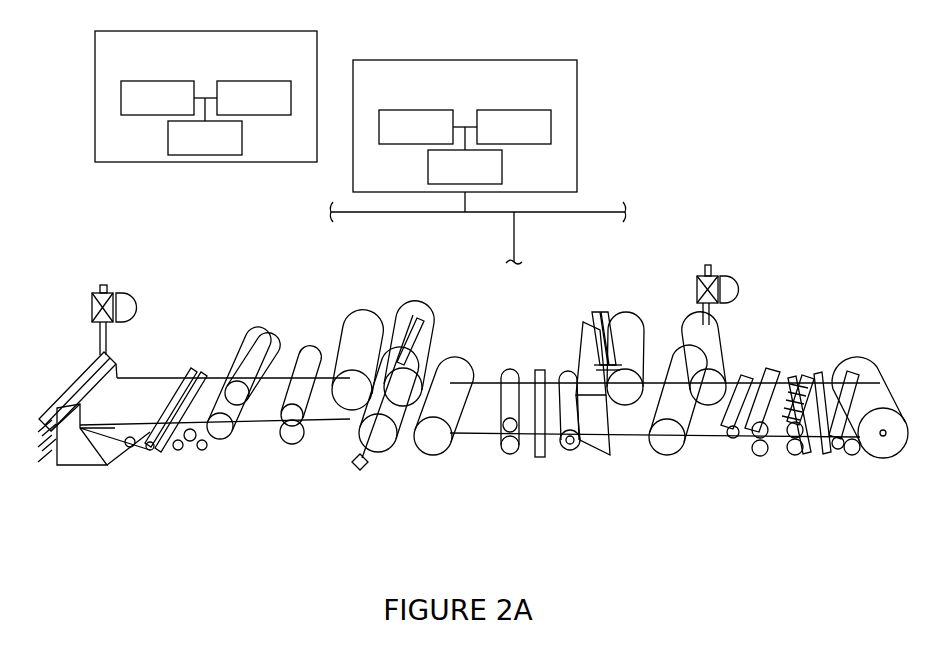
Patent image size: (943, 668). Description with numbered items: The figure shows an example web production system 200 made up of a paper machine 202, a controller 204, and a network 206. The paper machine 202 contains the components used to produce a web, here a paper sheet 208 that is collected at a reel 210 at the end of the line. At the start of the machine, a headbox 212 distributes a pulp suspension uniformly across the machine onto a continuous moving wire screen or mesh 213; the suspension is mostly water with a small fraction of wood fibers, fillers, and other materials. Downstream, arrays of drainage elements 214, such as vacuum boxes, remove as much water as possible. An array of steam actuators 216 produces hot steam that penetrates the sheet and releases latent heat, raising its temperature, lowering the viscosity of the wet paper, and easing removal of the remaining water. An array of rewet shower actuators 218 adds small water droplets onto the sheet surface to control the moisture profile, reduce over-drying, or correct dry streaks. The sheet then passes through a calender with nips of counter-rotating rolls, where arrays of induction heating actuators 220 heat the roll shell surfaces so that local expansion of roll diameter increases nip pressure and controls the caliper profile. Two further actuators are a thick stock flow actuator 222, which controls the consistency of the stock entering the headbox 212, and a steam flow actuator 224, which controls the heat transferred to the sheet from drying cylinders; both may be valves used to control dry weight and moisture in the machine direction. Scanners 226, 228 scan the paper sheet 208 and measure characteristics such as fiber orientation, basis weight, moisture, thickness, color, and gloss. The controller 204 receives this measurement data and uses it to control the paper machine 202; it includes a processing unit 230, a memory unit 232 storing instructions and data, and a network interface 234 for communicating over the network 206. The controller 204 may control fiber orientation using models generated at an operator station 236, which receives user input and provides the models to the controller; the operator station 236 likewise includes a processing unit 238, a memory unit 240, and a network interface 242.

The web production system 200 is at (473, 405).
The paper machine 202 is at (273, 283).
The controller 204 is at (578, 160).
The network 206 is at (388, 213).
The paper sheet 208 is at (268, 422).
The reel 210 is at (892, 455).
The headbox 212 is at (66, 382).
The wire screen or mesh 213 is at (148, 448).
The drainage elements 214 is at (167, 437).
The steam actuators 216 is at (366, 470).
The rewet shower actuators 218 is at (593, 312).
The induction heating actuators 220 is at (810, 440).
The thick stock flow actuator 222 is at (119, 284).
The steam flow actuator 224 is at (720, 275).
The scanner 226 is at (540, 457).
The scanner 228 is at (800, 370).
The processing unit 230 is at (416, 127).
The memory unit 232 is at (514, 127).
The network interface 234 is at (465, 167).
The operator station 236 is at (318, 75).
The processing unit 238 is at (157, 98).
The memory unit 240 is at (254, 98).
The network interface 242 is at (205, 138).